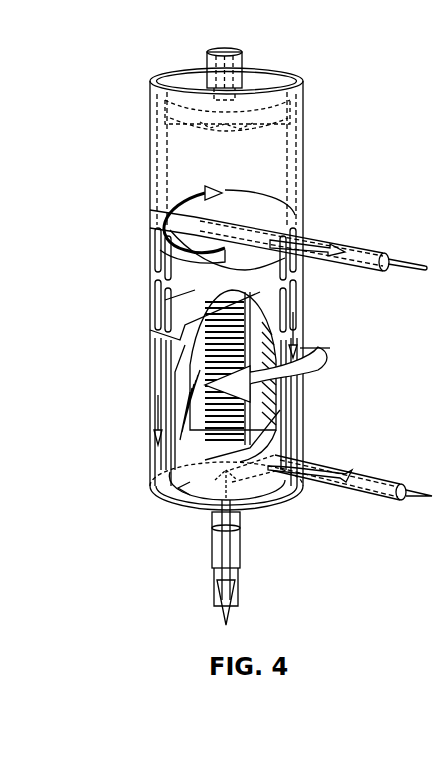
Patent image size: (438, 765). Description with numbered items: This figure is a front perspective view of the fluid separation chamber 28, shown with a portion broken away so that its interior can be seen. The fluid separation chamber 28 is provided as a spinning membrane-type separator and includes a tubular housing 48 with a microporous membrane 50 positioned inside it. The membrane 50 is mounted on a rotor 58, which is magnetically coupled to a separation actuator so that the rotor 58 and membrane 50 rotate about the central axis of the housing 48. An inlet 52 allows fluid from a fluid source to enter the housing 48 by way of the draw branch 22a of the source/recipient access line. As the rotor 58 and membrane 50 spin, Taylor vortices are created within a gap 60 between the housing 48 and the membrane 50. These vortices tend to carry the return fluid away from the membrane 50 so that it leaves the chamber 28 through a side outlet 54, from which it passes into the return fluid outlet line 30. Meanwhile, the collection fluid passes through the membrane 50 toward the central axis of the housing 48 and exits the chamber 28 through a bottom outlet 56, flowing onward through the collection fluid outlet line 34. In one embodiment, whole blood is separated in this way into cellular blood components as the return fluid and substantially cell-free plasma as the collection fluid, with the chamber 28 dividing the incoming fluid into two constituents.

The fluid separation chamber 28 is at (298, 60).
The tubular housing 48 is at (152, 138).
The rotor 58 is at (300, 124).
The gap 60 is at (300, 138).
The draw branch 22a is at (312, 237).
The inlet 52 is at (200, 262).
The microporous membrane 50 is at (185, 332).
The side outlet 54 is at (336, 469).
The return fluid outlet line 30 is at (376, 500).
The bottom outlet 56 is at (215, 554).
The collection fluid outlet line 34 is at (242, 592).